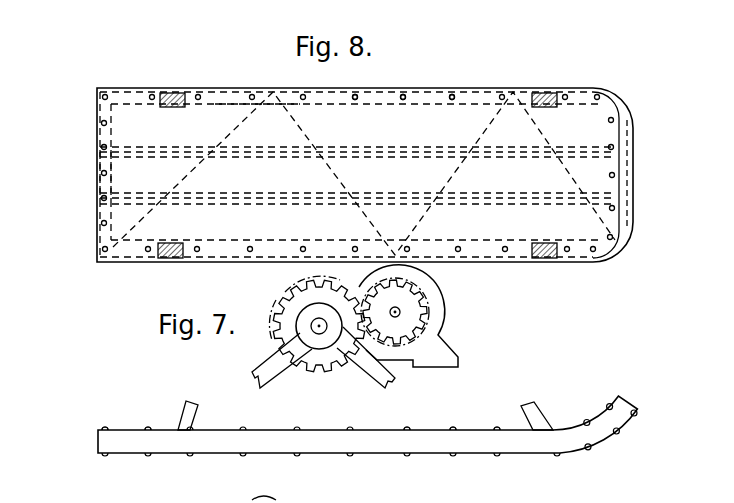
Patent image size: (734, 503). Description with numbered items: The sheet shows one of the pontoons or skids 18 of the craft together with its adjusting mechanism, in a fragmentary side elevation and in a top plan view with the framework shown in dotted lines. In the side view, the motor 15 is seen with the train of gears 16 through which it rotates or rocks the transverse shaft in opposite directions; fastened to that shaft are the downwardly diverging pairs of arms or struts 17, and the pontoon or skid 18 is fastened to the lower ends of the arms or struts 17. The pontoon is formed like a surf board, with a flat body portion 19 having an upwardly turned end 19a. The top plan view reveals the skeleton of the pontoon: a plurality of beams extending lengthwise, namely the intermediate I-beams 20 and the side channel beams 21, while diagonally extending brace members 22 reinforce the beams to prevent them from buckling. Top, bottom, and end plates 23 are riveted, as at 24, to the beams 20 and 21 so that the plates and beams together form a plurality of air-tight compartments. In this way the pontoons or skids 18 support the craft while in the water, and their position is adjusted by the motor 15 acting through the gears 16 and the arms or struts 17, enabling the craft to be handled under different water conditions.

In FIG. 7, the motor 15 is at (427, 321).
In FIG. 7, the train of gears 16 is at (382, 293).
In FIG. 8, the arms or struts 17 is at (172, 92).
In FIG. 7, the arms or struts 17 is at (194, 402).
In FIG. 7, the pontoon or skid 18 is at (509, 467).
In FIG. 7, the flat body portion 19 is at (380, 438).
In FIG. 7, the upwardly turned end 19a is at (611, 398).
In FIG. 8, the intermediate I-beams 20 is at (130, 195).
In FIG. 8, the side channel beams 21 is at (233, 103).
In FIG. 8, the diagonally extending brace members 22 is at (446, 172).
In FIG. 8, the plates 23 is at (265, 138).
In FIG. 8, the rivets 24 is at (452, 95).
In FIG. 7, the rivets 24 is at (178, 430).